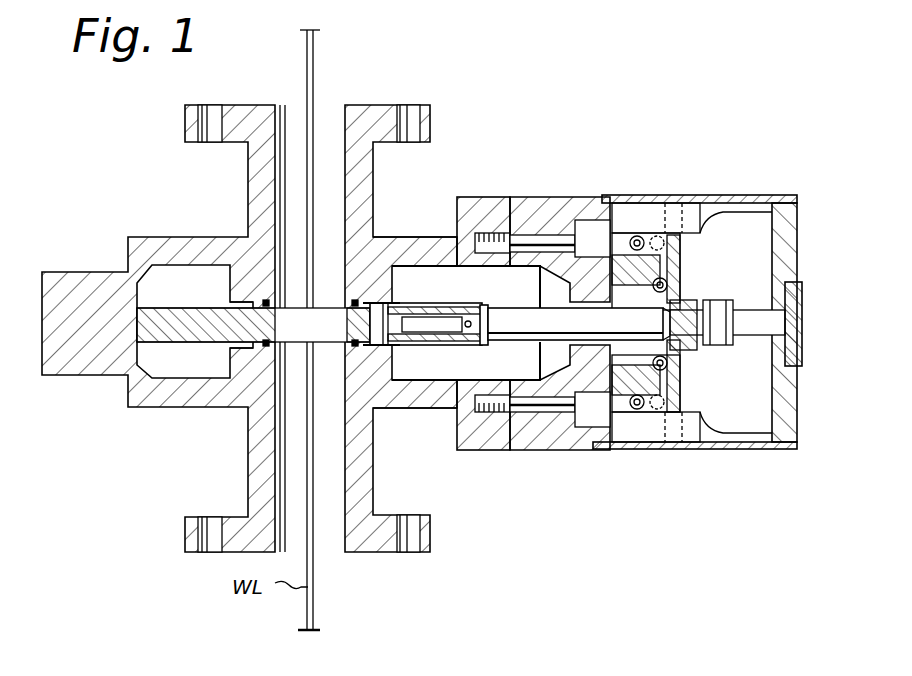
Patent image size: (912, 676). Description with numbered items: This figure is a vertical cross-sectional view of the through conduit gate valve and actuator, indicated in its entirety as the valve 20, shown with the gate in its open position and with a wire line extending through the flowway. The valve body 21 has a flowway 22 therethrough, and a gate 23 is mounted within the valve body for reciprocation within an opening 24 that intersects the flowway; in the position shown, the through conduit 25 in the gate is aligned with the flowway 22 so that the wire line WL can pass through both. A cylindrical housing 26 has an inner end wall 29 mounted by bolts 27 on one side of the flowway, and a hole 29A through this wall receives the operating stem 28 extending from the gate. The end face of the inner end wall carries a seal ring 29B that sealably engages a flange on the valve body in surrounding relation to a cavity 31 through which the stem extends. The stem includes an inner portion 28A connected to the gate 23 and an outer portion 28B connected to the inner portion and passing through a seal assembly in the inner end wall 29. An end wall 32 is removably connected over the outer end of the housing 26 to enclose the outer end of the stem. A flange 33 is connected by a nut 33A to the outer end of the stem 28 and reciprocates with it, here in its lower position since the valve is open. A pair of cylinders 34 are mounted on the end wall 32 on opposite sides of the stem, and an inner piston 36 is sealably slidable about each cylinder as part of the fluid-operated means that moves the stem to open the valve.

The valve 20 is at (489, 188).
The valve body 21 is at (157, 414).
The flowway 22 is at (345, 121).
The gate 23 is at (173, 306).
The opening 24 is at (350, 346).
The through conduit 25 is at (345, 308).
The cylindrical housing 26 is at (672, 188).
The bolts 27 is at (545, 425).
The operating stem 28 is at (439, 360).
The inner portion 28A is at (424, 346).
The outer portion 28B is at (515, 345).
The inner end wall 29 is at (553, 196).
The hole 29A is at (582, 310).
The seal ring 29B is at (458, 198).
The cavity 31 is at (416, 276).
The end wall 32 is at (800, 206).
The flange 33 is at (682, 390).
The nut 33A is at (690, 305).
The cylinders 34 is at (752, 308).
The inner piston 36 is at (713, 345).